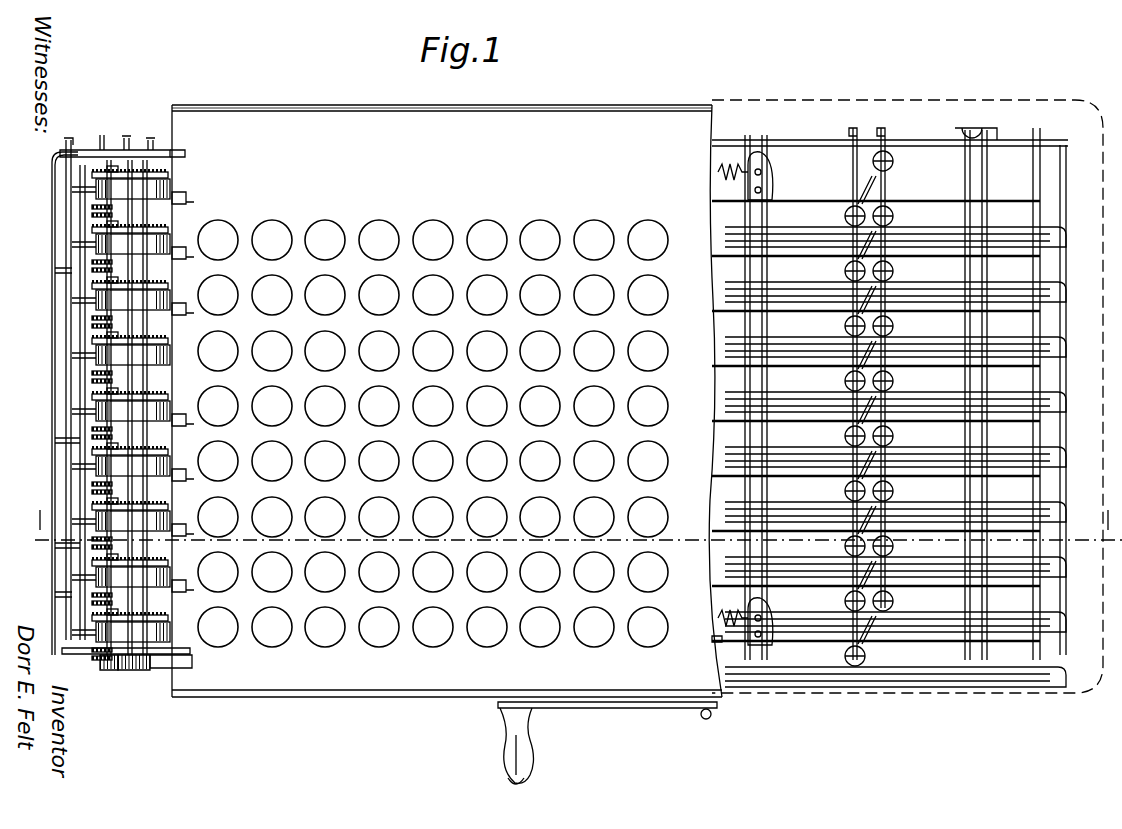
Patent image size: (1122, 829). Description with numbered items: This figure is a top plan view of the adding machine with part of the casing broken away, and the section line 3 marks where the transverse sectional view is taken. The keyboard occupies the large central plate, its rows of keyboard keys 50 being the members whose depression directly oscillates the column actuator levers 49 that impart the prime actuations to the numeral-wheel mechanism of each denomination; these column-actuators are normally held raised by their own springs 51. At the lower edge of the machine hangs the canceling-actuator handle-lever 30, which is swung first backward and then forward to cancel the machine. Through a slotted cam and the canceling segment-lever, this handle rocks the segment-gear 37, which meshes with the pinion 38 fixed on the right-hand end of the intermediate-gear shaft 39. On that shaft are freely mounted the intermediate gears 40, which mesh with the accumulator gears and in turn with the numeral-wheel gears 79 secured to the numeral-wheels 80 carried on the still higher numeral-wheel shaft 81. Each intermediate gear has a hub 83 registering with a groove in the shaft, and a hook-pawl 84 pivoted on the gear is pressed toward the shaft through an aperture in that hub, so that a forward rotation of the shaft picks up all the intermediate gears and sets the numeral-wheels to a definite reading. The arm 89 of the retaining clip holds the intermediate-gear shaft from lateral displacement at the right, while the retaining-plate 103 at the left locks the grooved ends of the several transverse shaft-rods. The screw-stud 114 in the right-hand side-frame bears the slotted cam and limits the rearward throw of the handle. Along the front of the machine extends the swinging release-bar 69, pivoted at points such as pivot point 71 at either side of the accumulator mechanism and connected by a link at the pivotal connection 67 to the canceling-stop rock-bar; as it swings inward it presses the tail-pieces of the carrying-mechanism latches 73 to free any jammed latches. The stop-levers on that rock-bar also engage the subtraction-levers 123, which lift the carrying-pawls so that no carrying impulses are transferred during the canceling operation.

The section line 3— 3 is at (569, 525).
The canceling-actuator handle-lever 30 is at (537, 745).
The segment-gear 37 is at (160, 670).
The pinion 38 is at (112, 672).
The intermediate-gear shaft 39 is at (150, 140).
The intermediate gears 40 is at (55, 594).
The column actuator levers 49 is at (815, 638).
The keyboard keys 50 is at (312, 660).
The springs 51 is at (878, 668).
The pivotal connection 67 is at (88, 656).
The swinging release-bar 69 is at (52, 345).
The pivot point 71 is at (68, 140).
The carrying-mechanism latches 73 is at (80, 575).
The numeral-wheel gears 79 is at (195, 556).
The numeral-wheels 80 is at (170, 600).
The numeral-wheel shaft 81 is at (175, 137).
The hub 83 is at (195, 440).
The hook-pawl 84 is at (55, 545).
The arm of retaining clip 89 is at (132, 672).
The retaining-plate 103 is at (185, 153).
The screw-stud 114 is at (765, 650).
The subtraction-levers 123 is at (192, 496).